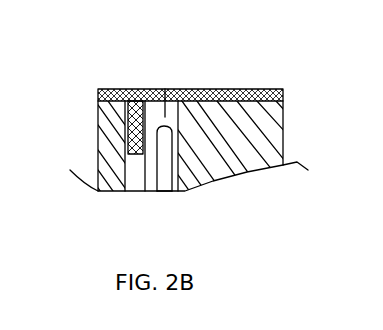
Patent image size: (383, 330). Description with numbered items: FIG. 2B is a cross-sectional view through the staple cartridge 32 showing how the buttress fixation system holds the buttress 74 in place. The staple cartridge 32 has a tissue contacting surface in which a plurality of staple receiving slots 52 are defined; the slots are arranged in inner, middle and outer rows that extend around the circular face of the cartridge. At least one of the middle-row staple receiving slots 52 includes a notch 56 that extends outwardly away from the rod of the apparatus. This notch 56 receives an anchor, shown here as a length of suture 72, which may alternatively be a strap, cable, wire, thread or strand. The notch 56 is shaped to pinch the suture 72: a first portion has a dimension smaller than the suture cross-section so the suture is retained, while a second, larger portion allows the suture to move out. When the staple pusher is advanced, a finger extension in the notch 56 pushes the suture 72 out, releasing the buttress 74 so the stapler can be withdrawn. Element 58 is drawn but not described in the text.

The staple cartridge 32 is at (98, 151).
The staple receiving slot 52 is at (165, 117).
The notch 56 is at (138, 182).
The pin bottom end 58 is at (164, 183).
The length of suture 72 is at (98, 118).
The buttress 74 is at (275, 88).